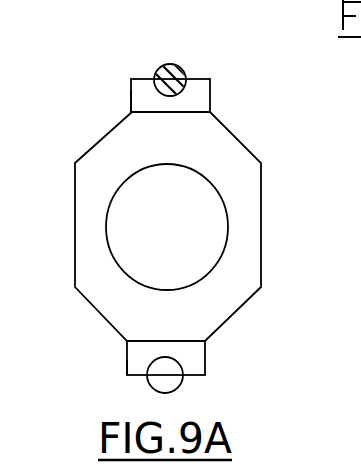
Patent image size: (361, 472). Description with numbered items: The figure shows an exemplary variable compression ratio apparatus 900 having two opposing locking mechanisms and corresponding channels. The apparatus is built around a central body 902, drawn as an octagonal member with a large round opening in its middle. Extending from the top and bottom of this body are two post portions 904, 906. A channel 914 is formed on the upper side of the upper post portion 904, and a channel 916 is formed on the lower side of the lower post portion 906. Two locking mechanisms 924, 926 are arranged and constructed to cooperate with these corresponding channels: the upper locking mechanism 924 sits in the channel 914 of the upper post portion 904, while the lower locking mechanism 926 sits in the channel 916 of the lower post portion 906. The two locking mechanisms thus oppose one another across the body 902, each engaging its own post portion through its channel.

The variable compression ratio apparatus 900 is at (69, 56).
The octagonal body with central opening 902 is at (261, 236).
The post portion 904 is at (210, 98).
The post portion 906 is at (206, 353).
The channel 914 is at (160, 88).
The channel 916 is at (155, 363).
The locking mechanism 924 is at (178, 66).
The locking mechanism 926 is at (153, 389).